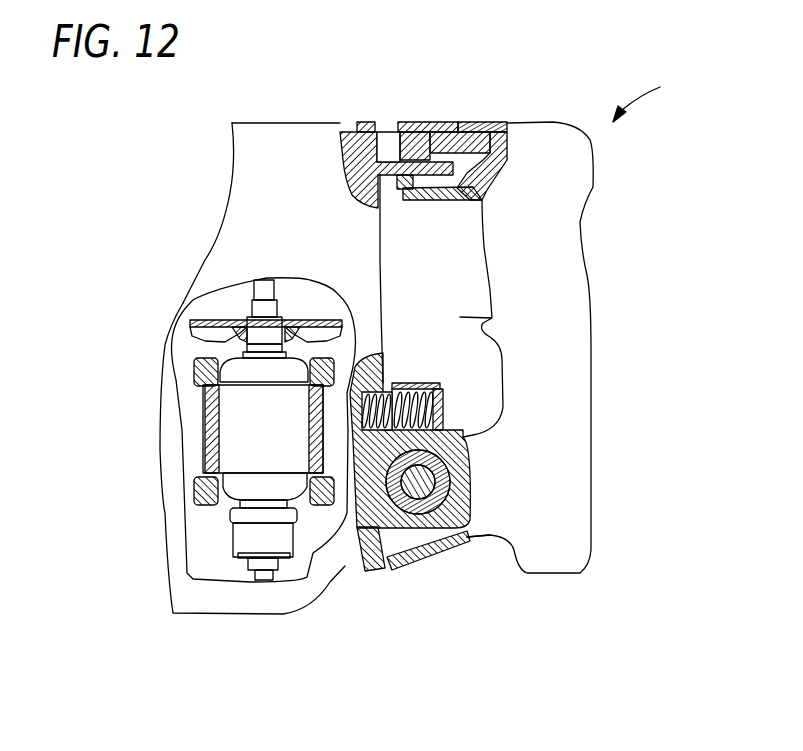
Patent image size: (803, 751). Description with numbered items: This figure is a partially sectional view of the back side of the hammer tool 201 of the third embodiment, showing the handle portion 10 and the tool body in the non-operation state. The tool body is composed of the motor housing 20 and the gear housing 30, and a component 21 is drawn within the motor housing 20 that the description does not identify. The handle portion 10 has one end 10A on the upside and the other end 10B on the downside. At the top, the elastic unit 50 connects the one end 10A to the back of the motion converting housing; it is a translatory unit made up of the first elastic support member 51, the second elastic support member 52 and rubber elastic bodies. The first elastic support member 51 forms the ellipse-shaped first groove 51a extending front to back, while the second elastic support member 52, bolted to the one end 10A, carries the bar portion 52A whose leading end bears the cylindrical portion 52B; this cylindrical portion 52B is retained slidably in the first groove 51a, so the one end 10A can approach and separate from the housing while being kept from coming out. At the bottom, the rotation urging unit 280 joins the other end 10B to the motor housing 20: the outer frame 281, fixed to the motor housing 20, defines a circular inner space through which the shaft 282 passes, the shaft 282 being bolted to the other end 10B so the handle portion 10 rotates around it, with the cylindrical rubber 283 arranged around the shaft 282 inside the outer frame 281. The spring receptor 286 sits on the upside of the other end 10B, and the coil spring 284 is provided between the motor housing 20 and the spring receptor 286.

The handle portion 10 is at (560, 320).
The one end of the handle portion 10A is at (478, 121).
The other end of the handle portion 10B is at (464, 538).
The motor housing 20 is at (177, 598).
The pump 21 is at (232, 437).
The gear housing 30 is at (295, 143).
The elastic unit 50 is at (432, 200).
The first elastic support member 51 is at (342, 128).
The first groove 51a is at (388, 145).
The second elastic support member 52 is at (505, 130).
The bar portion 52A is at (457, 126).
The cylindrical portion 52B is at (412, 130).
The hammer tool 201 is at (645, 88).
The rotation urging unit 280 is at (437, 545).
The outer frame 281 is at (360, 571).
The shaft 282 is at (462, 450).
The cylindrical rubber 283 is at (440, 430).
The coil spring 284 is at (403, 387).
The spring receptor 286 is at (442, 386).